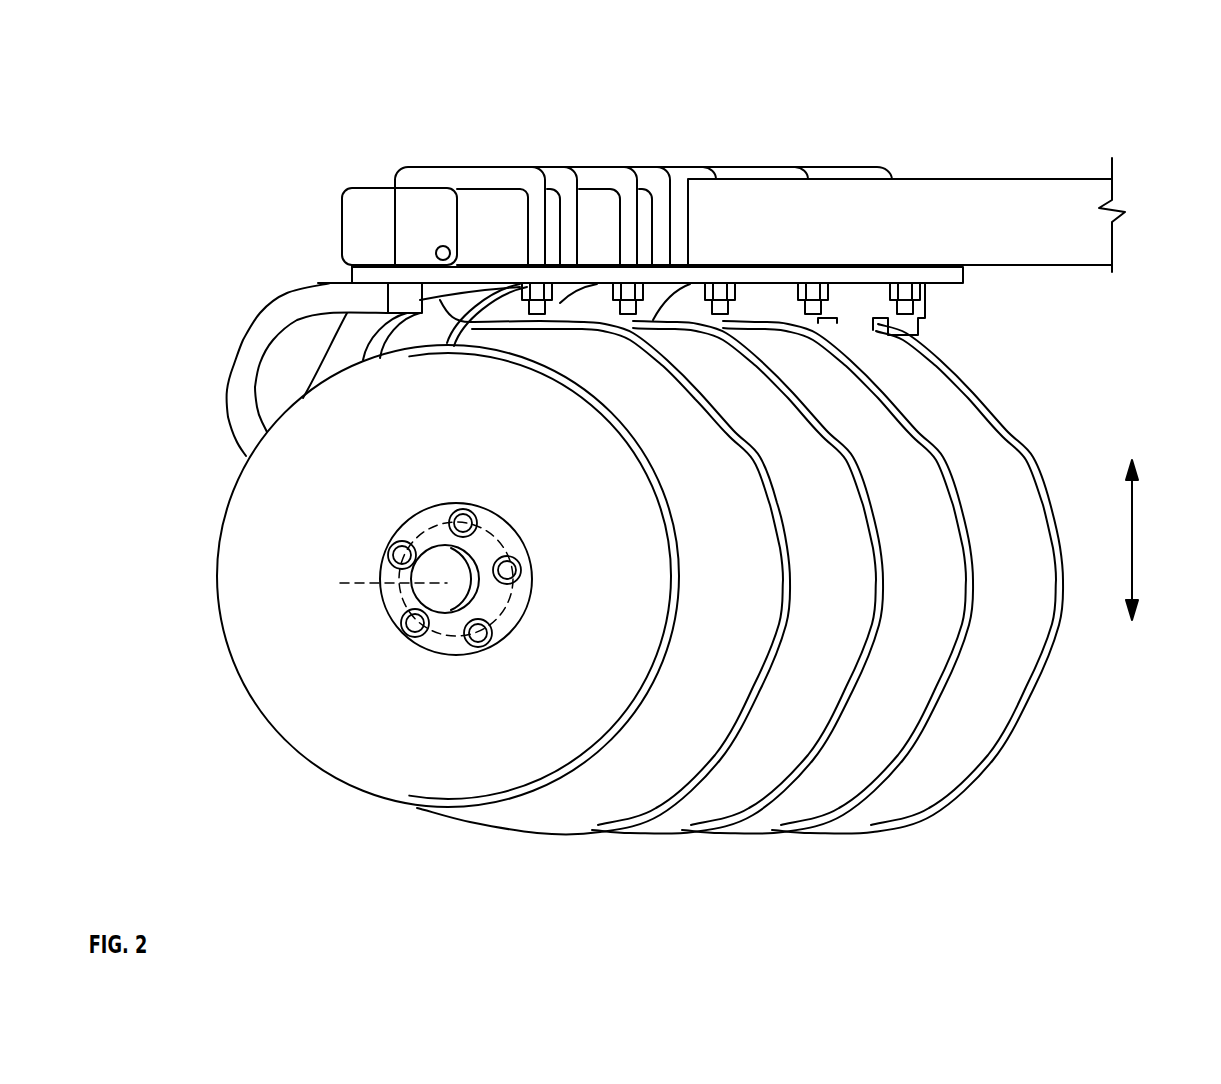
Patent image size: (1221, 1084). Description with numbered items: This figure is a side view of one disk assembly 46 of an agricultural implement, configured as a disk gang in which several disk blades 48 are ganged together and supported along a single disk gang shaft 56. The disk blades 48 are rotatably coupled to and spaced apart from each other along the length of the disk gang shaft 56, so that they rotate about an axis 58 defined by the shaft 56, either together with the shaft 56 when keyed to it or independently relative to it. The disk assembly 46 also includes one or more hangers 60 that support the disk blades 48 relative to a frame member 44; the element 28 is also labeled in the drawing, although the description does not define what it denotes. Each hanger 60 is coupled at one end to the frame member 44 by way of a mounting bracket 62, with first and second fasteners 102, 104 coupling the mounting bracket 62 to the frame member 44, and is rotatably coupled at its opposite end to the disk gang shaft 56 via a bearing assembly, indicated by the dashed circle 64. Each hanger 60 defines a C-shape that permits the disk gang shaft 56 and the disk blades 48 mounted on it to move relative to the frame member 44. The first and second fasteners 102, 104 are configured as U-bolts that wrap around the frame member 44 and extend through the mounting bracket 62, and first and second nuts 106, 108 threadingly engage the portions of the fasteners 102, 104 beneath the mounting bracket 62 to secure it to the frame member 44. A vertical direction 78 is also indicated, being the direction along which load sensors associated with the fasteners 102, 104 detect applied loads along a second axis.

The disk assembly 46 is at (316, 94).
The frame bar 28 is at (347, 184).
The frame member 44 is at (355, 213).
The hanger 60 is at (244, 334).
The first fastener 102 is at (457, 175).
The second fastener 104 is at (585, 172).
The first nut 106 is at (537, 296).
The second nut 108 is at (627, 300).
The axis 58 is at (350, 580).
The bearing assembly 64 is at (527, 607).
The disk gang shaft 56 is at (458, 603).
The disk blade 48 is at (312, 775).
The mounting bracket 62 is at (952, 284).
The vertical direction 78 is at (1132, 522).